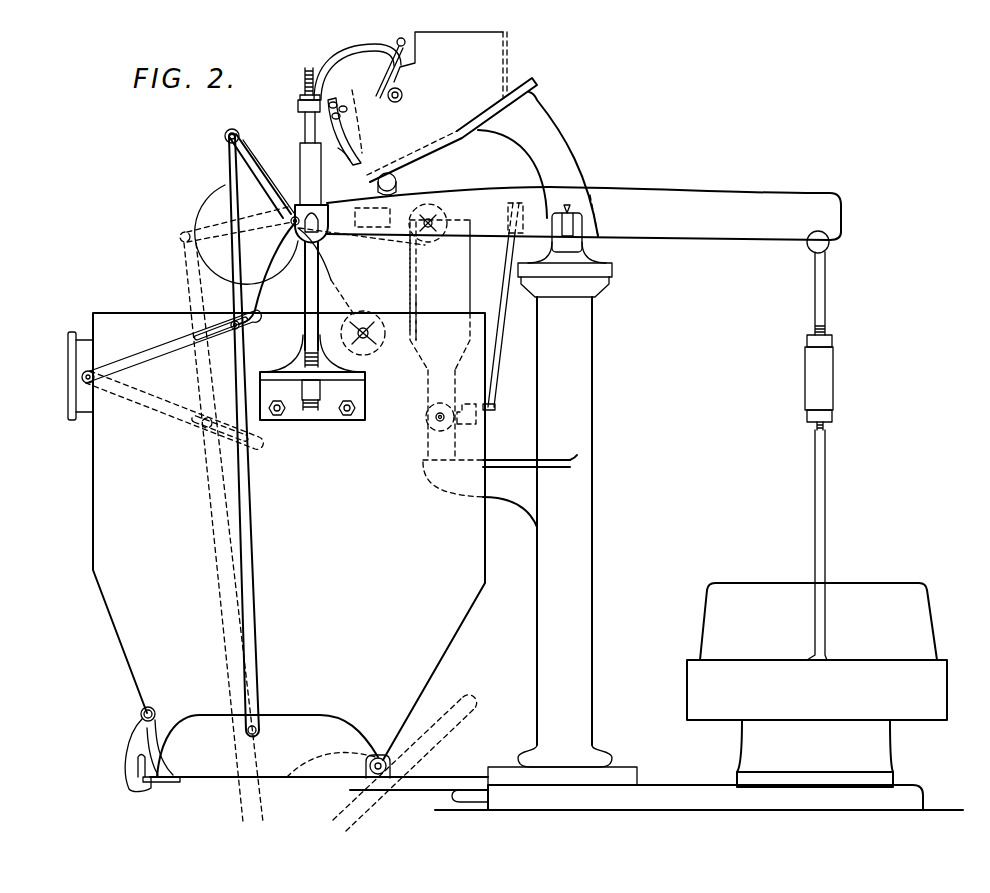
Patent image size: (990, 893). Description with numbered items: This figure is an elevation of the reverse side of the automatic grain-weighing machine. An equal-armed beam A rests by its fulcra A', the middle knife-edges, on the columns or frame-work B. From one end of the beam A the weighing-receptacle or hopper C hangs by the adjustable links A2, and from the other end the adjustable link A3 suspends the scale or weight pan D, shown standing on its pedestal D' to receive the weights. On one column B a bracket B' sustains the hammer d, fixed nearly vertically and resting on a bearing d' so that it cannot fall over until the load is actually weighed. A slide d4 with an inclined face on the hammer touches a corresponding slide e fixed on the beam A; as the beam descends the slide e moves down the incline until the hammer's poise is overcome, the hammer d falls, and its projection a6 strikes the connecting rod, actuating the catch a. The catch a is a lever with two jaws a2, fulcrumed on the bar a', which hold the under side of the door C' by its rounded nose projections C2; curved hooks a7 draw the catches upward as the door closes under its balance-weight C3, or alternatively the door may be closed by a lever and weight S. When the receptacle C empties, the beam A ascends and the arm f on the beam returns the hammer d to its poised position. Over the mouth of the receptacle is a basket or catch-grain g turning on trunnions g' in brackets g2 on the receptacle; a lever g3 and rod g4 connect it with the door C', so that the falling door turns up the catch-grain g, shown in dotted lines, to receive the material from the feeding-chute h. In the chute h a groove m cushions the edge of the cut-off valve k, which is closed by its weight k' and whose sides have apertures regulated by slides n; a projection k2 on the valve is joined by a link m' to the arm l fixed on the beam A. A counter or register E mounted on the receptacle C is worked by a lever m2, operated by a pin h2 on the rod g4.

The equal-armed beam A is at (584, 213).
The fulcra A' is at (538, 164).
The adjustable links A2 is at (332, 281).
The adjustable link A3 is at (822, 282).
The columns or frame-work B is at (699, 507).
The bracket B' is at (530, 491).
The receptacle or hopper C is at (289, 536).
The door C' is at (319, 752).
The rounded nose projections C2 is at (160, 781).
The balance-weight C3 is at (471, 780).
The scale or weight pan D is at (817, 651).
The weight pedestal D' is at (815, 753).
The counter or register E is at (72, 375).
The lever and weight S is at (365, 319).
The catch a is at (128, 755).
The bar a' is at (157, 704).
The jaws a2 is at (138, 787).
The projection a6 is at (415, 308).
The curved piece or hook a7 is at (172, 768).
The hammer d is at (446, 358).
The bearing d' is at (438, 417).
The slide d4 is at (410, 258).
The slide e is at (418, 205).
The arm f is at (504, 295).
The basket or catch-grain g is at (246, 212).
The trunnions g' is at (290, 234).
The brackets g2 is at (266, 274).
The lever g3 is at (260, 170).
The rod g4 is at (228, 193).
The feeding-chute h is at (452, 107).
The pin h2 is at (240, 330).
The valve k is at (351, 131).
The weight k' is at (334, 120).
The projection k2 is at (366, 88).
The arm l is at (345, 63).
The groove m is at (385, 175).
The link m' is at (384, 68).
The lever m2 is at (168, 351).
The slides n is at (337, 148).